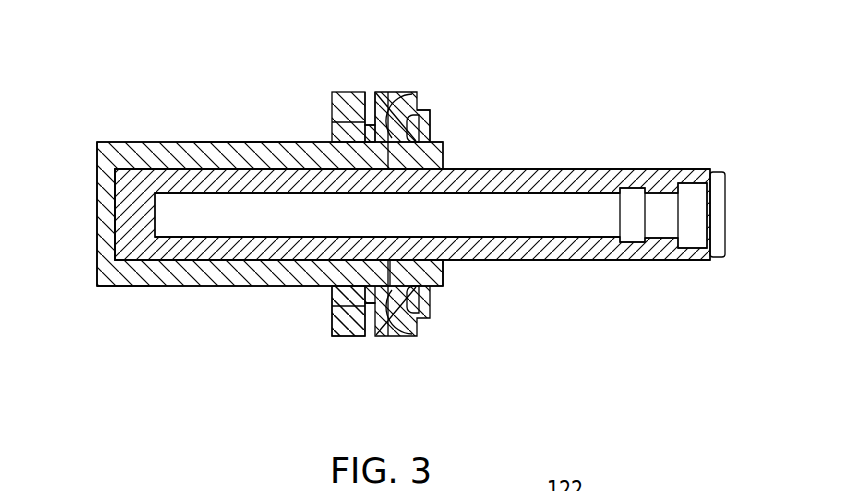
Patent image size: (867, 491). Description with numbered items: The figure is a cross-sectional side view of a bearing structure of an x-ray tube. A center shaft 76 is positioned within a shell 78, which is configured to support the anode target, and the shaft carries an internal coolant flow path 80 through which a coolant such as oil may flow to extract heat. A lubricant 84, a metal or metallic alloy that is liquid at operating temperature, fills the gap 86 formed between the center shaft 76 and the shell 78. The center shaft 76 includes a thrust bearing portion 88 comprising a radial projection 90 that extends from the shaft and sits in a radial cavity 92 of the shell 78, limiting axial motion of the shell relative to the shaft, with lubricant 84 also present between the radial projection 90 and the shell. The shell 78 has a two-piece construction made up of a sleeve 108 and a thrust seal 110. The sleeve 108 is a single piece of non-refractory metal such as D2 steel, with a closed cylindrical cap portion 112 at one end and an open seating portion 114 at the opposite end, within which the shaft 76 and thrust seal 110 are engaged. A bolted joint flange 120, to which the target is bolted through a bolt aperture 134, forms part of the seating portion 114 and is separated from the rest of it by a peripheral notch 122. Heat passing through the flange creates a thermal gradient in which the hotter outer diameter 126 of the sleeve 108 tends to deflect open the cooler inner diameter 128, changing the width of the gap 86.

The center shaft 76 is at (543, 169).
The shell 78 is at (389, 79).
The coolant flow path 80 is at (182, 218).
The lubricant 84 is at (268, 142).
The gap 86 is at (213, 142).
The thrust bearing portion 88 is at (333, 288).
The radial projection 90 is at (443, 157).
The radial cavity 92 is at (398, 100).
The sleeve 108 is at (159, 138).
The thrust seal 110 is at (446, 268).
The cap portion 112 is at (129, 290).
The seating portion 114 is at (365, 87).
The bolted joint flange 120 is at (337, 336).
The peripheral notch 122 is at (369, 315).
The outer diameter 126 is at (178, 142).
The inner diameter 128 is at (118, 141).
The bolt aperture 134 is at (333, 118).